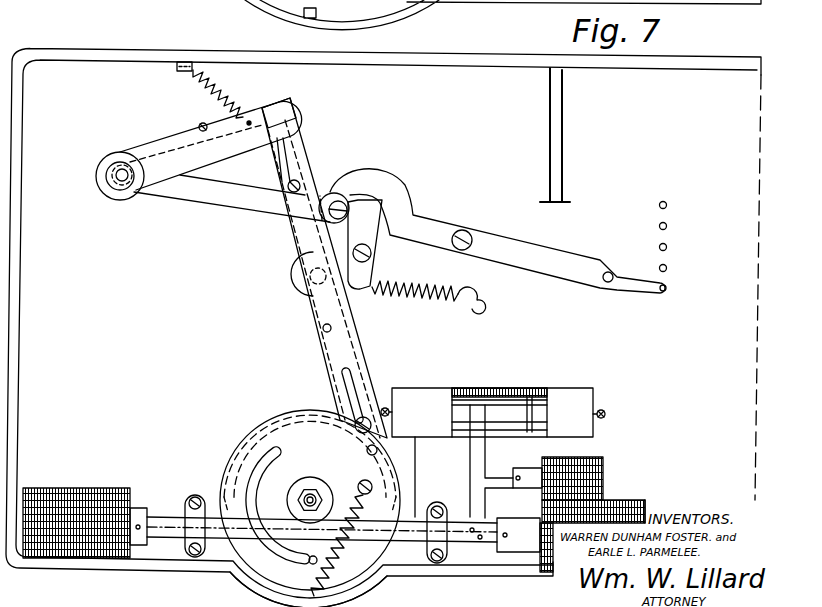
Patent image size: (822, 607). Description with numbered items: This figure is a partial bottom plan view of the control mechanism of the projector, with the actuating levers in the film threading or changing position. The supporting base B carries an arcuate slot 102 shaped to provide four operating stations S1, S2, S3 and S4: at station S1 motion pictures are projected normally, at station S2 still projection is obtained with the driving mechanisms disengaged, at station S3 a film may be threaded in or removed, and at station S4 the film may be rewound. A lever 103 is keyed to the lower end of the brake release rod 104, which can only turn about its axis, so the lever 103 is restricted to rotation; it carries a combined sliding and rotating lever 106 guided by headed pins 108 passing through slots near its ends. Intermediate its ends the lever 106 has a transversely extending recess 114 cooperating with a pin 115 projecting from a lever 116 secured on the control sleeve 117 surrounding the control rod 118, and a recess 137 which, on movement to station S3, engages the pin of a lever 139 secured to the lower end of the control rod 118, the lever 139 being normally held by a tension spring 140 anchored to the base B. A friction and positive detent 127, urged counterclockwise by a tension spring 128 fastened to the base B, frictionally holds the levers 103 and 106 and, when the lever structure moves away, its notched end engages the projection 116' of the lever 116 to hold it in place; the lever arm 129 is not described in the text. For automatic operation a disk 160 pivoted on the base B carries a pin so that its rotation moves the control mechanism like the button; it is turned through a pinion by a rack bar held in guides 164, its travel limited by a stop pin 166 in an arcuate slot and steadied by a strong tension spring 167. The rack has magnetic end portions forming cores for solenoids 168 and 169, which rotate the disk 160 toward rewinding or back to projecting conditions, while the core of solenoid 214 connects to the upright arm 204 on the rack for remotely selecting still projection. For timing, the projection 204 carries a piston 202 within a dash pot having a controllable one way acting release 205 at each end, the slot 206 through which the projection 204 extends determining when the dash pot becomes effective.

The arcuate slot 102 is at (297, 406).
The lever 103 is at (324, 330).
The brake release rod 104 is at (309, 276).
The combined sliding and rotating lever 106 is at (333, 350).
The headed pin 108 is at (364, 362).
The transversely extending recess 114 is at (341, 196).
The pin 115 is at (345, 205).
The lever 116 is at (232, 209).
The projection 116' is at (497, 228).
The control sleeve 117 is at (108, 201).
The control rod 118 is at (112, 178).
The friction and positive detent 127 is at (373, 266).
The tension spring 128 is at (457, 293).
The lever arm 129 is at (553, 272).
The recess 137 is at (297, 105).
The lever 139 is at (190, 143).
The tension spring 140 is at (226, 96).
The disk 160 is at (360, 581).
The guides 164 is at (446, 557).
The stop pin 166 is at (311, 564).
The tension spring 167 is at (338, 556).
The solenoid 168 is at (68, 488).
The solenoid 169 is at (646, 504).
The piston 202 is at (532, 393).
The projection 204 is at (468, 451).
The one way acting release 205 is at (394, 389).
The slot 206 is at (494, 442).
The solenoid 214 is at (603, 478).
The operating station S1 is at (217, 492).
The operating station S2 is at (242, 442).
The operating station S3 is at (369, 452).
The operating station S4 is at (405, 493).
The supporting base B is at (383, 328).